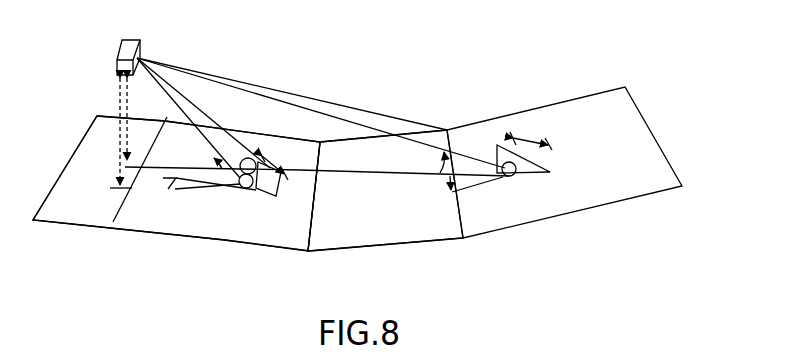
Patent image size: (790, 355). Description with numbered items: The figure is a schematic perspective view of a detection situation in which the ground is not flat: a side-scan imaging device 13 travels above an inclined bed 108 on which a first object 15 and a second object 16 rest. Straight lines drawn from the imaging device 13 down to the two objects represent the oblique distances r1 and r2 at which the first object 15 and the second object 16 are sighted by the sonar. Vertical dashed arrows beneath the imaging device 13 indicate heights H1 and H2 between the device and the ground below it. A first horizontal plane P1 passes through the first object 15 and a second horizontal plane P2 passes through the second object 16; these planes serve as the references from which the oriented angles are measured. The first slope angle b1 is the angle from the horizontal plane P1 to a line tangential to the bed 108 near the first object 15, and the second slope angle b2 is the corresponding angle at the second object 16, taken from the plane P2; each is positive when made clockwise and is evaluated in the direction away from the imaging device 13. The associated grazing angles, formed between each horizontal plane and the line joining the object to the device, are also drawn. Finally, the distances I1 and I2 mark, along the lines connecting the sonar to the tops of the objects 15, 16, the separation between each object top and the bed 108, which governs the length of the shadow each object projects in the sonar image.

The side-scan imaging device 13 is at (117, 62).
The first object 15 is at (245, 183).
The second object 16 is at (508, 173).
The inclined bed 108 is at (642, 185).
The first horizontal plane P1 is at (130, 188).
The second horizontal plane P2 is at (337, 168).
The first oblique distance r1 is at (181, 110).
The second oblique distance r2 is at (275, 102).
The sensor height to road plane H1 is at (110, 133).
The sensor height to level plane H2 is at (139, 119).
The first slope angle b1 is at (196, 186).
The second slope angle b2 is at (435, 187).
The first top-to-bed distance I1 is at (274, 162).
The second top-to-bed distance I2 is at (531, 133).